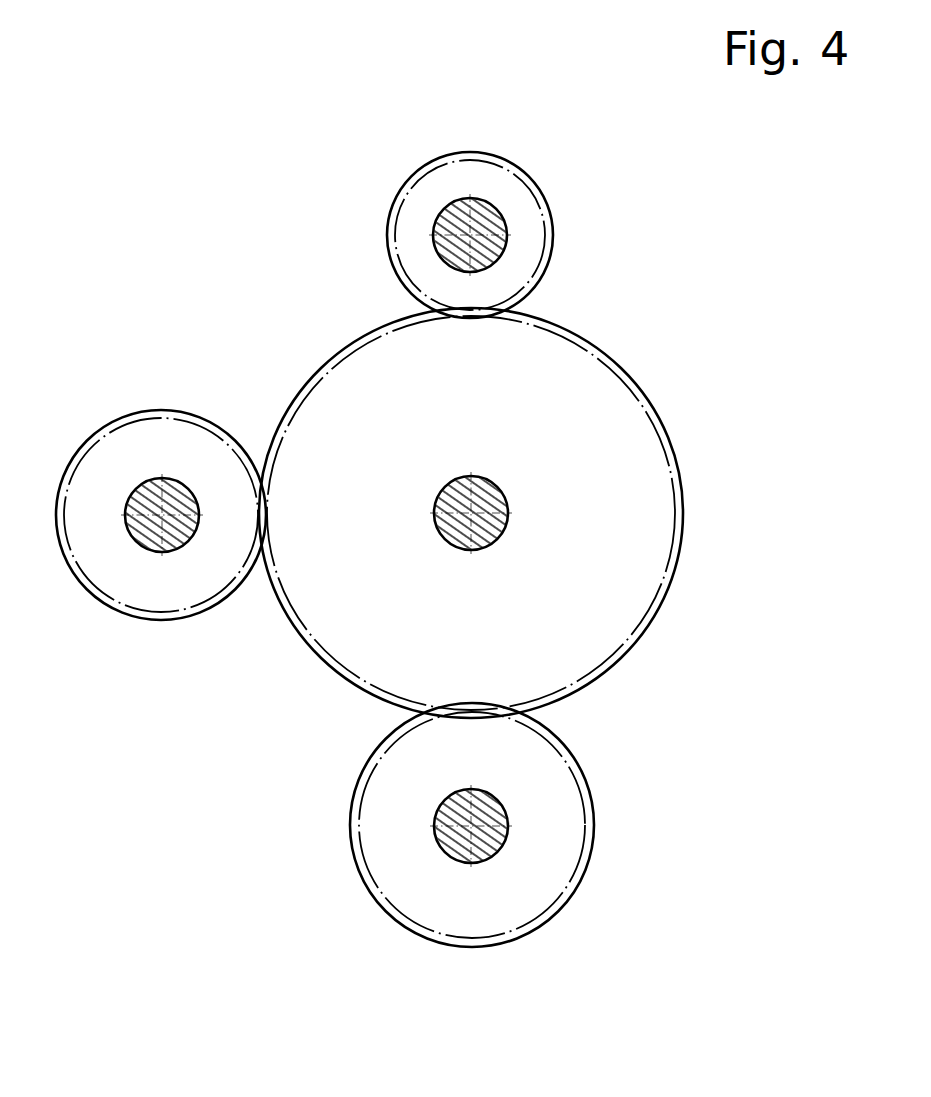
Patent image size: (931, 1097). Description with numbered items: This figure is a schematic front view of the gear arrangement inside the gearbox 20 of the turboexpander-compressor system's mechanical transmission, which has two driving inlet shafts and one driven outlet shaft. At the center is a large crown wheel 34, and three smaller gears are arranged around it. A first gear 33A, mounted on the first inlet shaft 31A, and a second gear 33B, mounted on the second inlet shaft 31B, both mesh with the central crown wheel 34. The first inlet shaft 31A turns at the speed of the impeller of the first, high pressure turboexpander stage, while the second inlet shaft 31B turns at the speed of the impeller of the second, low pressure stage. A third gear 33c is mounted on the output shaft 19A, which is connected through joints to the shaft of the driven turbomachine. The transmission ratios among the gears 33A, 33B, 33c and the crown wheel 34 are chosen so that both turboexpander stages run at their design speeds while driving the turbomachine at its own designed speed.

The gearbox 20 is at (193, 252).
The central crown wheel 34 is at (627, 612).
The first gear 33A is at (527, 255).
The second gear 33B is at (547, 853).
The third gear 33c is at (137, 587).
The first inlet shaft 31A is at (487, 220).
The second inlet shaft 31B is at (458, 858).
The output shaft 19A is at (154, 493).